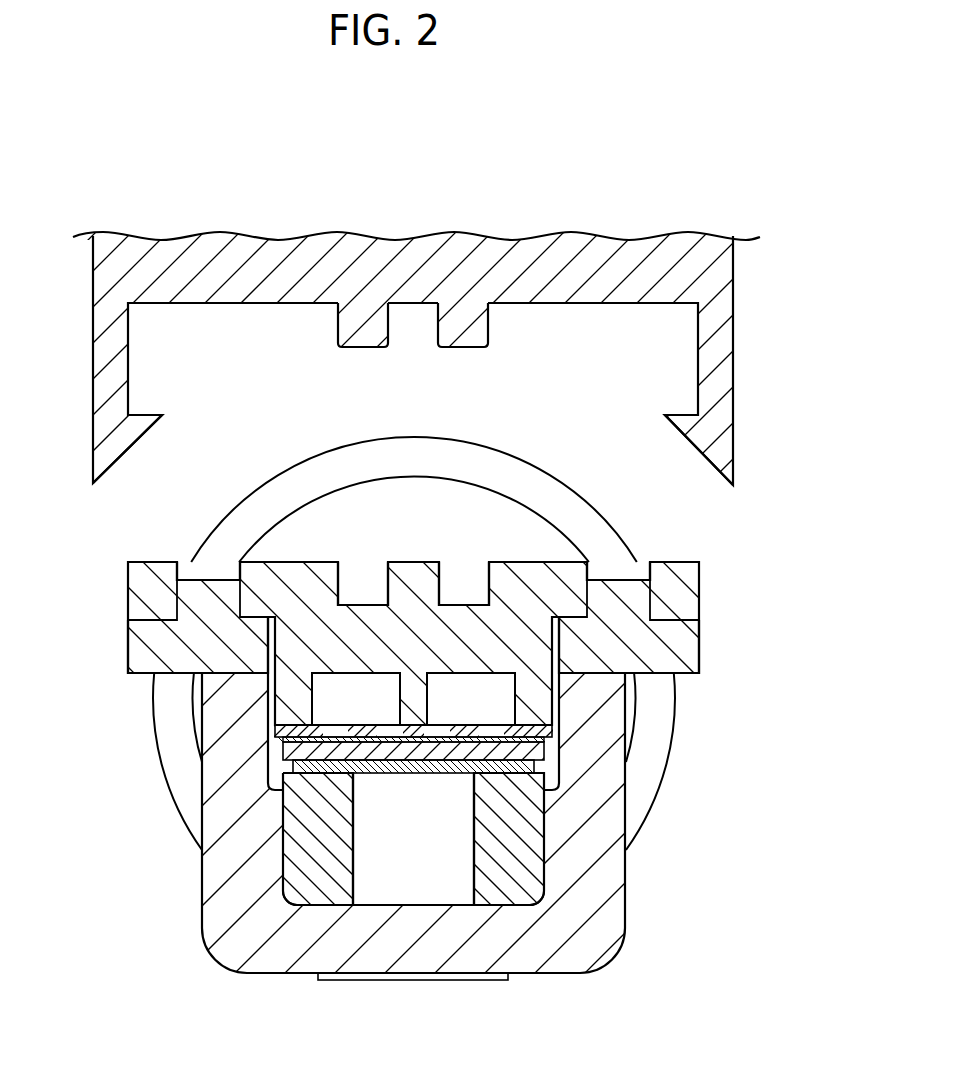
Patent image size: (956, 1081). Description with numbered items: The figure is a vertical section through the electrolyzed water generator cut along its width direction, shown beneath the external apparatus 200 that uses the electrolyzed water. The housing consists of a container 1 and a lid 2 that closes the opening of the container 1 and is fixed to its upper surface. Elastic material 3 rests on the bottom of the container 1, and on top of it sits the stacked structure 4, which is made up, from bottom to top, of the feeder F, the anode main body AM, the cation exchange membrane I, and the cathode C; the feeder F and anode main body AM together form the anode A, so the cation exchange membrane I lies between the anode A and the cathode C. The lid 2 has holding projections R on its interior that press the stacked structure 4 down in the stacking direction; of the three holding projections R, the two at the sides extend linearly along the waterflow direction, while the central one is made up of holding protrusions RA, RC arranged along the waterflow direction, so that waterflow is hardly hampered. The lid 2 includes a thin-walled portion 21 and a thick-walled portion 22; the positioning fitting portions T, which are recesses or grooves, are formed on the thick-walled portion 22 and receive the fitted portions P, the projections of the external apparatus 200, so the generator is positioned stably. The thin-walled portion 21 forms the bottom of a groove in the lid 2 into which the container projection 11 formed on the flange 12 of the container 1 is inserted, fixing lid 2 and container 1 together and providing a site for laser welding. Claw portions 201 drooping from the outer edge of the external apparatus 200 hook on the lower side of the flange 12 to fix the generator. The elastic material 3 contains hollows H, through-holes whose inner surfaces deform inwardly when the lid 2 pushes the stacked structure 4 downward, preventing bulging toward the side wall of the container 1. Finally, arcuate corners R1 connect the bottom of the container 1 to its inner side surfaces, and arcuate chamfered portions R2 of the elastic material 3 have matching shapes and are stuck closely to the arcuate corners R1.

The external apparatus 200 is at (528, 245).
The claw portions 201 is at (128, 432).
The fitted portions P is at (346, 331).
The container 1 is at (632, 910).
The lid 2 is at (703, 577).
The container projection 11 is at (597, 592).
The flange 12 is at (148, 640).
The thin-walled portion 21 is at (212, 572).
The thick-walled portion 22 is at (412, 590).
The positioning fitting portions T is at (357, 585).
The holding projections R is at (468, 705).
The holding protrusion RA is at (356, 699).
The holding protrusion RC is at (412, 698).
The elastic material 3 is at (300, 857).
The stacked structure 4 is at (544, 795).
The cathode C is at (548, 731).
The cation exchange membrane I is at (545, 742).
The anode A is at (519, 803).
The anode main body AM is at (548, 757).
The feeder F is at (540, 768).
The hollows H is at (405, 877).
The arcuate corners R1 is at (330, 890).
The arcuate chamfered portions R2 is at (290, 897).